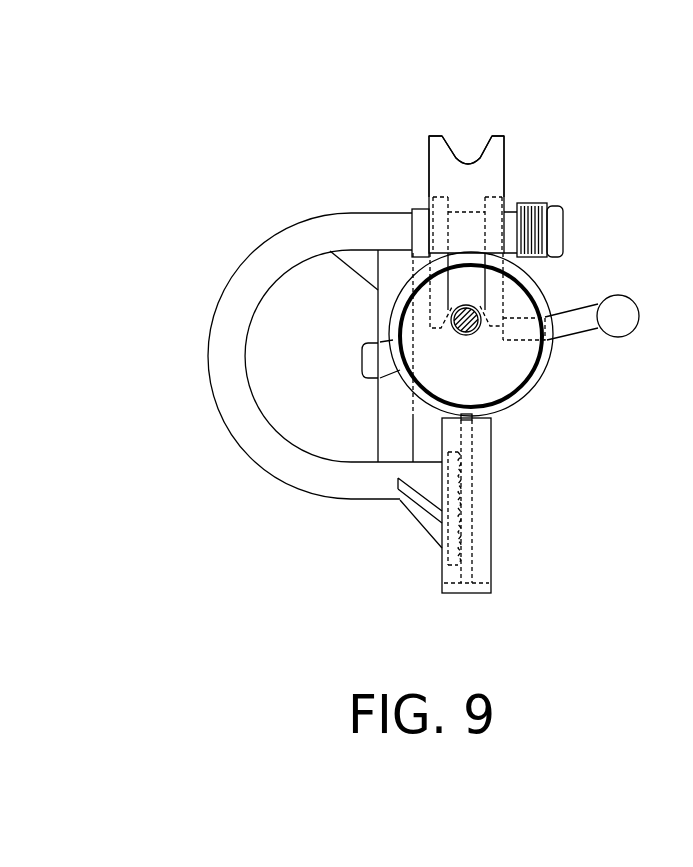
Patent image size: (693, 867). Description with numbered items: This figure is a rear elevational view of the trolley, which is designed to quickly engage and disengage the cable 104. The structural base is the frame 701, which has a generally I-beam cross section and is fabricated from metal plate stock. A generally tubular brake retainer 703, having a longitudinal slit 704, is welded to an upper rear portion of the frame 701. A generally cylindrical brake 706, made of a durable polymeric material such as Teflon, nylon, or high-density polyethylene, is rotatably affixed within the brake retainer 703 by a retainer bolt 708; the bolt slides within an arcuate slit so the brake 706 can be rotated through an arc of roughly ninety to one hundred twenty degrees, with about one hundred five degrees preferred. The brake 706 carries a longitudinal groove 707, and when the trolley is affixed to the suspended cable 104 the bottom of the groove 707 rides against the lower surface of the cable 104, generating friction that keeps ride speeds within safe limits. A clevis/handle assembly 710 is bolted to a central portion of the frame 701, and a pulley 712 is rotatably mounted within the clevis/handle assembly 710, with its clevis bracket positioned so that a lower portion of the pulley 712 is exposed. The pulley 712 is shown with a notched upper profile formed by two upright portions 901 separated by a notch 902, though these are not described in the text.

The notch 902 is at (467, 150).
The yoke prong 901 is at (437, 147).
The pulley 712 is at (445, 185).
The longitudinal groove 707 is at (458, 292).
The retainer bolt 708 is at (574, 322).
The brake retainer 703 is at (537, 373).
The cable 104 is at (475, 333).
The brake 706 is at (483, 380).
The longitudinal slit 704 is at (364, 362).
The clevis/handle assembly 710 is at (270, 452).
The frame 701 is at (477, 530).